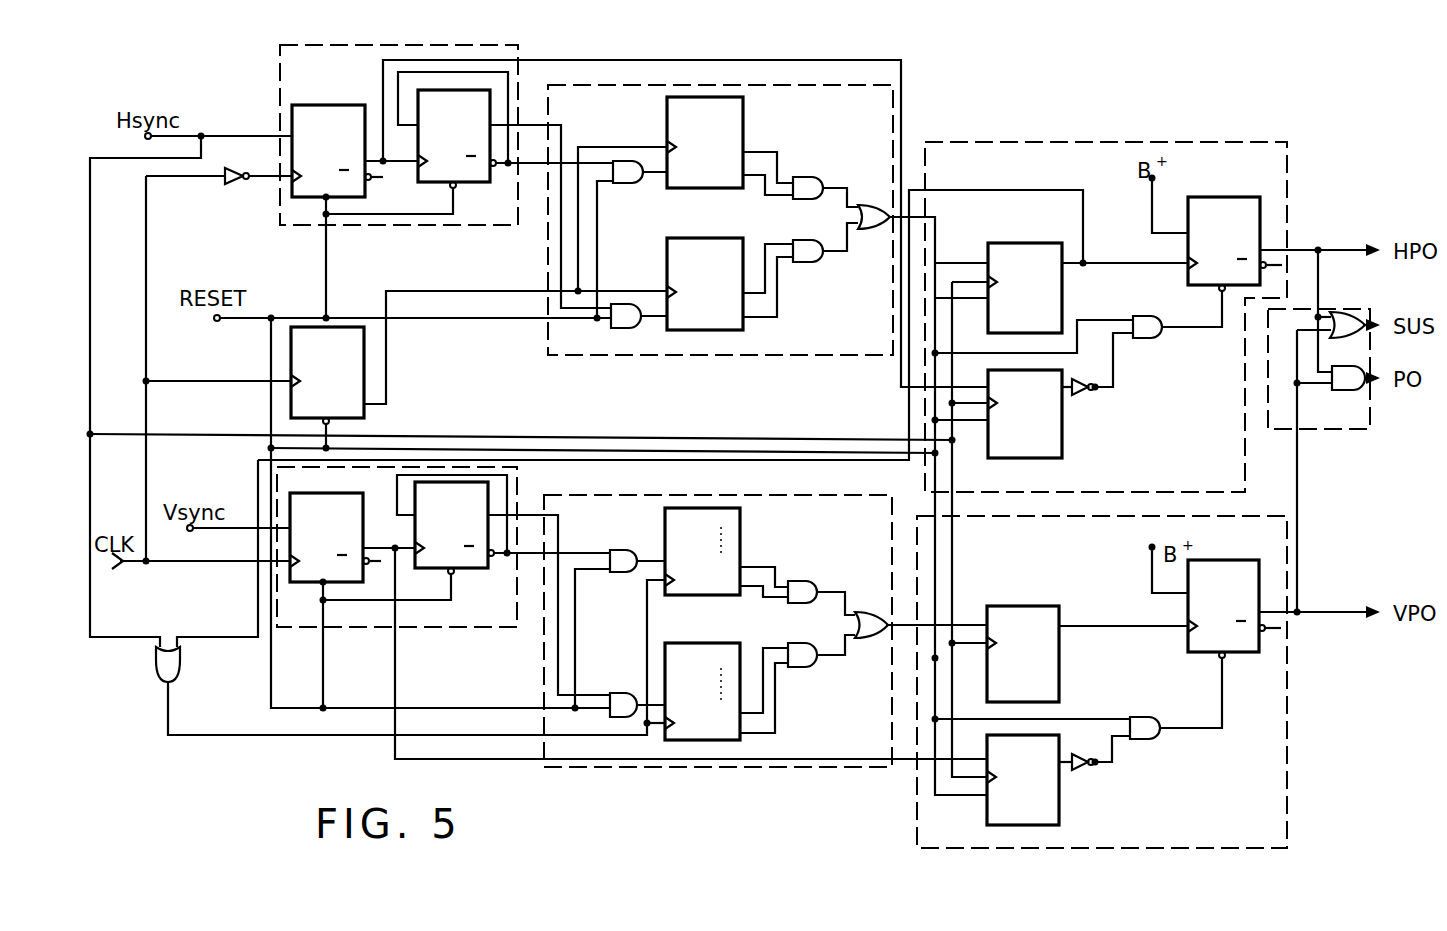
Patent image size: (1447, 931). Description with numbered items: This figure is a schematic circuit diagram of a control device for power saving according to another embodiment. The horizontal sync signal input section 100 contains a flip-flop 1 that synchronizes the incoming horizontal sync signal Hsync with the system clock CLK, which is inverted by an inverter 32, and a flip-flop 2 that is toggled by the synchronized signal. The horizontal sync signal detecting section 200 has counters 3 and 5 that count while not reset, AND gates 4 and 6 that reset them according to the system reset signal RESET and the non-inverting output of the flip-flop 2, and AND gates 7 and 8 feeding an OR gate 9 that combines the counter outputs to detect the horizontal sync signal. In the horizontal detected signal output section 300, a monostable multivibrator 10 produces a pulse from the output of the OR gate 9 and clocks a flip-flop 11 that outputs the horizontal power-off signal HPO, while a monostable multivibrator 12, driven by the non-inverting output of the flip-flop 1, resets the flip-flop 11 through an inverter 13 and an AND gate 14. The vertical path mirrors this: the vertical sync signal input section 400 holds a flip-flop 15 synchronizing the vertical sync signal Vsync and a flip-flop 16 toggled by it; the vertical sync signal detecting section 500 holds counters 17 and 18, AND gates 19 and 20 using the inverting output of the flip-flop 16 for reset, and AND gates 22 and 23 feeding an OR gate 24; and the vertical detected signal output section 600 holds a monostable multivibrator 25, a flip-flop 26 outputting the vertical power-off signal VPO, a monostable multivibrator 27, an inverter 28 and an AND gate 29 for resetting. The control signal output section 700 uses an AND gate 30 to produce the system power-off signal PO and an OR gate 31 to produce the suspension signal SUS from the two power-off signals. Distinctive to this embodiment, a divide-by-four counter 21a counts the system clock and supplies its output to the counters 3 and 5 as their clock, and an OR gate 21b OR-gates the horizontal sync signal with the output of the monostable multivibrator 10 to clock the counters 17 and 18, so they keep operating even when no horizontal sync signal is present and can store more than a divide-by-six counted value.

The flip-flop 1 is at (330, 105).
The flip-flop 2 is at (490, 183).
The counter 3 is at (667, 118).
The AND gate 4 is at (630, 184).
The counter 5 is at (730, 238).
The AND gate 6 is at (630, 329).
The AND gate 7 is at (815, 180).
The AND gate 8 is at (815, 263).
The OR gate 9 is at (870, 230).
The monostable multivibrator 10 is at (1037, 243).
The flip-flop 11 is at (1228, 197).
The monostable multivibrator 12 is at (1062, 445).
The inverter 13 is at (1080, 398).
The AND gate 14 is at (1146, 317).
The flip-flop 15 is at (330, 493).
The flip-flop 16 is at (475, 570).
The counter 17 is at (742, 530).
The counter 18 is at (700, 643).
The AND gate 19 is at (620, 550).
The AND gate 20 is at (620, 692).
The divide-by-4 counter 21a is at (364, 415).
The OR gate 21b is at (178, 665).
The AND gate 22 is at (808, 582).
The AND gate 23 is at (806, 668).
The OR gate 24 is at (860, 612).
The monostable multivibrator 25 is at (1040, 606).
The flip-flop 26 is at (1192, 653).
The monostable multivibrator 27 is at (1059, 815).
The inverter 28 is at (1082, 772).
The AND gate 29 is at (1155, 740).
The AND gate 30 is at (1372, 393).
The OR gate 31 is at (1344, 314).
The inverter 32 is at (233, 186).
The horizontal sync signal input section 100 is at (280, 78).
The horizontal sync signal detecting section 200 is at (733, 356).
The horizontal detected signal output section 300 is at (1052, 142).
The vertical sync signal input section 400 is at (462, 628).
The vertical sync signal detecting section 500 is at (585, 768).
The vertical detected signal output section 600 is at (914, 814).
The control signal output section 700 is at (1322, 430).